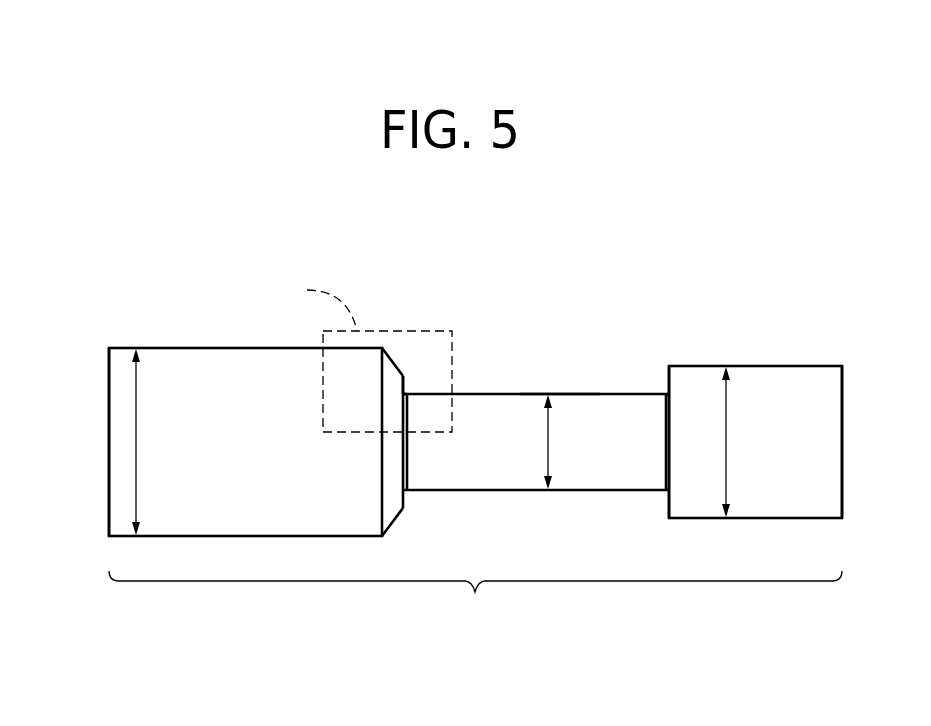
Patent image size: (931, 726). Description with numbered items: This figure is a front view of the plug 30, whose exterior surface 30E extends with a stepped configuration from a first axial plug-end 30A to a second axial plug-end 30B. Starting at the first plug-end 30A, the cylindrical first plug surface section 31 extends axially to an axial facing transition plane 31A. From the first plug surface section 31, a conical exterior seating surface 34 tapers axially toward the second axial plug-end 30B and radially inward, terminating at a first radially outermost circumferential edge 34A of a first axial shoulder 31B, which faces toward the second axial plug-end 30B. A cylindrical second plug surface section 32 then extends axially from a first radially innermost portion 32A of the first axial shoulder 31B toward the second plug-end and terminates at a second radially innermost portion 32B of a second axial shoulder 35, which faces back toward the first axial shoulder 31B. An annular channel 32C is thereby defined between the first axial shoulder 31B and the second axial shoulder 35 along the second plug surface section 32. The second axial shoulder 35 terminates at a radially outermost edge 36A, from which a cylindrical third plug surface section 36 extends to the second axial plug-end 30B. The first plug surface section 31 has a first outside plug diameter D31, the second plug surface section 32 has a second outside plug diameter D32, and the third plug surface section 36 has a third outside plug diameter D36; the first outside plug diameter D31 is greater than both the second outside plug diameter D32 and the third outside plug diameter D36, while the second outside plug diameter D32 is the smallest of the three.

The plug 30 is at (461, 421).
The first axial plug-end 30A is at (109, 458).
The second axial plug-end 30B is at (842, 430).
The exterior surface 30E is at (475, 600).
The first plug surface section 31 is at (162, 347).
The axial facing transition plane 31A is at (383, 538).
The first axial shoulder 31B is at (405, 502).
The second plug surface section 32 is at (508, 491).
The first radially innermost portion 32A is at (406, 394).
The second radially innermost portion 32B is at (666, 490).
The annular channel 32C is at (557, 334).
The conical exterior seating surface 34 is at (393, 362).
The first radially outermost circumferential edge 34A is at (405, 376).
The second axial shoulder 35 is at (668, 380).
The third plug surface section 36 is at (782, 366).
The radially outermost edge 36A is at (669, 366).
The first outside plug diameter D31 is at (137, 446).
The second outside plug diameter D32 is at (547, 441).
The third outside plug diameter D36 is at (727, 442).